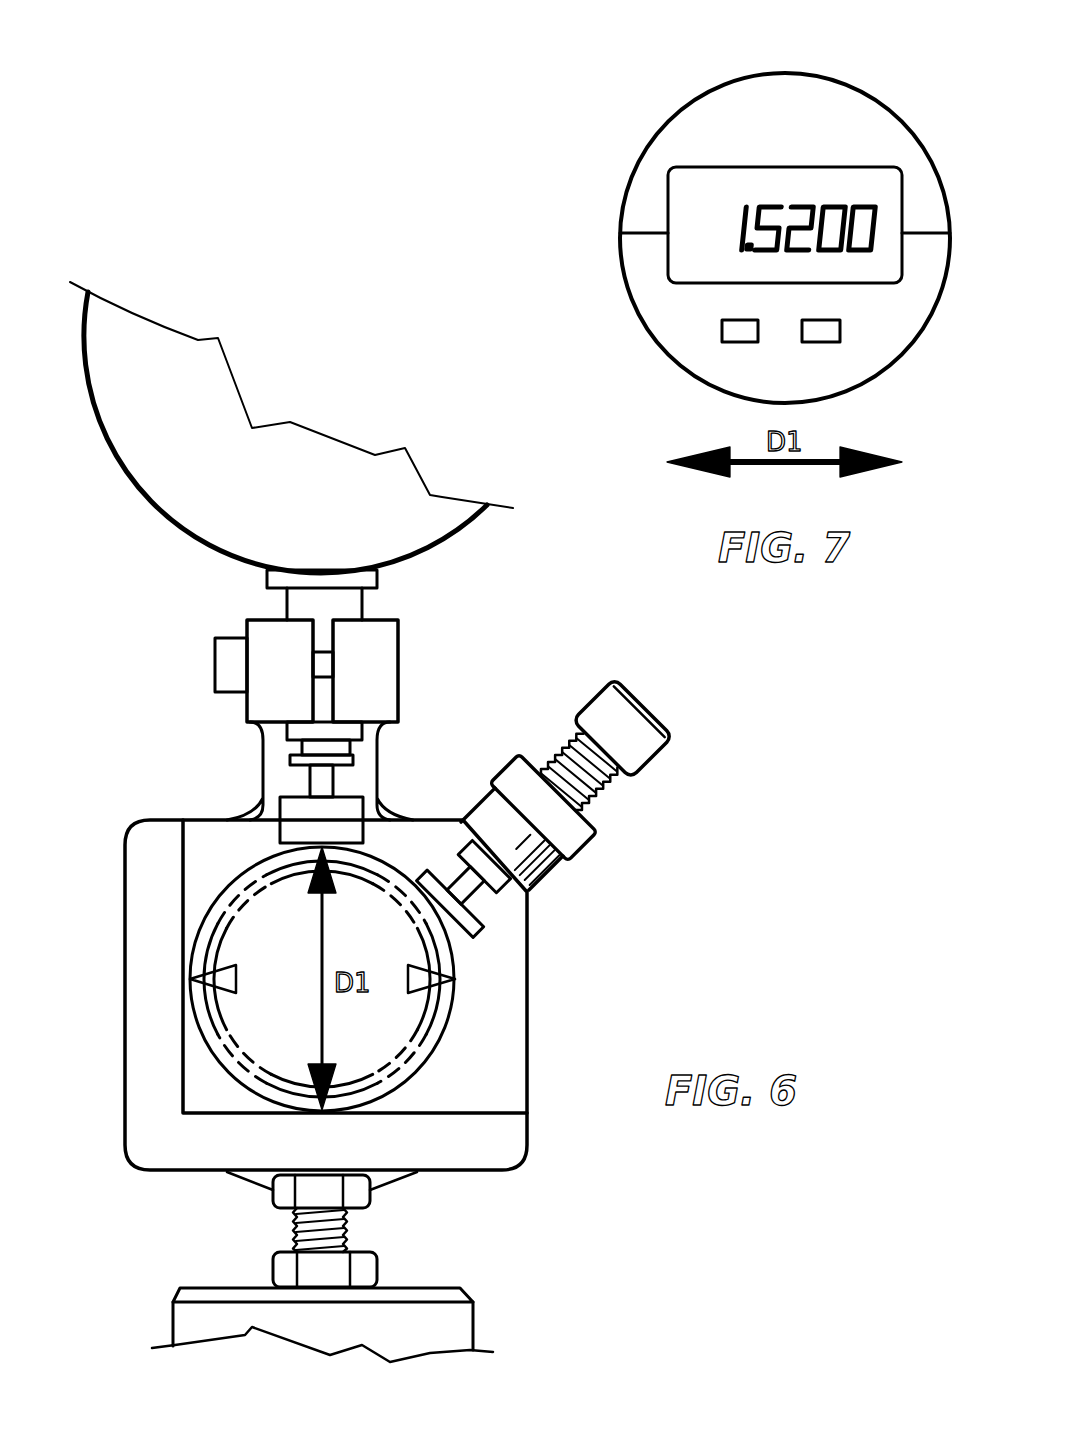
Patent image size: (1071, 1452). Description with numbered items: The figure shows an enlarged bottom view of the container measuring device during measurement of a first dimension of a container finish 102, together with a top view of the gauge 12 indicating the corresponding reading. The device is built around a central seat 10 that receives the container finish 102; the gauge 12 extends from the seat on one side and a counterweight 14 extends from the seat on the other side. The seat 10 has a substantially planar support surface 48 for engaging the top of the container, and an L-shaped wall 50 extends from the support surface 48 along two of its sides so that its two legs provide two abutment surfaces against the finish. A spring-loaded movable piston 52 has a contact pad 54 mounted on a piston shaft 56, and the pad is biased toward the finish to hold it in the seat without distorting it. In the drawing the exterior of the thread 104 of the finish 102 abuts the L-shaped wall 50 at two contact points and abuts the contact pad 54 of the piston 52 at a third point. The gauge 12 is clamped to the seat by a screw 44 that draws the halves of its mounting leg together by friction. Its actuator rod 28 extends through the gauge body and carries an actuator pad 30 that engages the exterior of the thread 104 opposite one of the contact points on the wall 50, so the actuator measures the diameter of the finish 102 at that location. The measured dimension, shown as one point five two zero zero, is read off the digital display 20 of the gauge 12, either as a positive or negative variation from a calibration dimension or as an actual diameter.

In FIG. 6, the central seat 10 is at (408, 1017).
In FIG. 7, the gauge 12 is at (860, 84).
In FIG. 6, the gauge 12 is at (240, 503).
In FIG. 6, the counterweight 14 is at (482, 1306).
In FIG. 7, the digital display 20 is at (682, 208).
In FIG. 6, the actuator rod 28 is at (318, 780).
In FIG. 6, the actuator pad 30 is at (348, 820).
In FIG. 6, the screw 44 is at (226, 663).
In FIG. 6, the support surface 48 is at (398, 966).
In FIG. 6, the L-shaped wall 50 is at (467, 1150).
In FIG. 6, the movable piston 52 is at (612, 797).
In FIG. 6, the contact pad 54 is at (482, 936).
In FIG. 6, the piston shaft 56 is at (482, 898).
In FIG. 6, the container finish 102 is at (410, 1062).
In FIG. 6, the thread 104 is at (455, 1022).